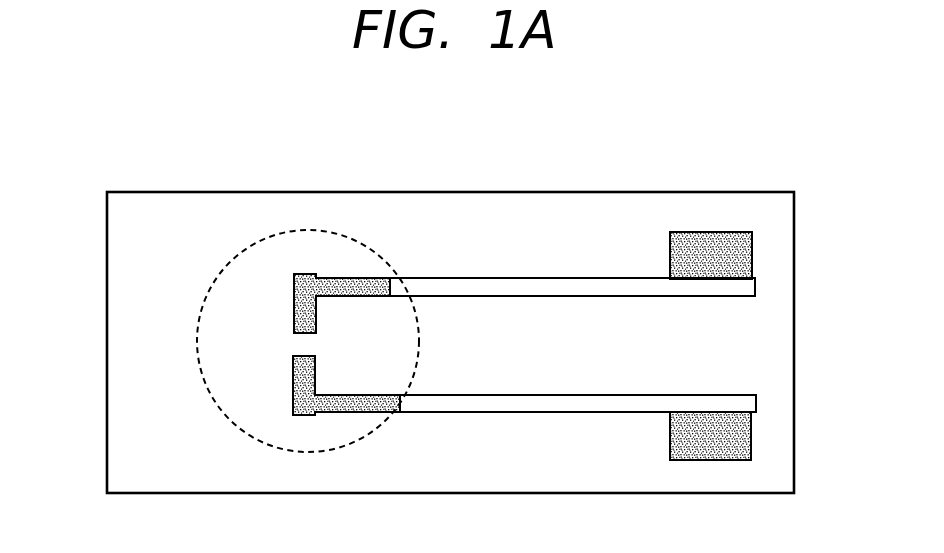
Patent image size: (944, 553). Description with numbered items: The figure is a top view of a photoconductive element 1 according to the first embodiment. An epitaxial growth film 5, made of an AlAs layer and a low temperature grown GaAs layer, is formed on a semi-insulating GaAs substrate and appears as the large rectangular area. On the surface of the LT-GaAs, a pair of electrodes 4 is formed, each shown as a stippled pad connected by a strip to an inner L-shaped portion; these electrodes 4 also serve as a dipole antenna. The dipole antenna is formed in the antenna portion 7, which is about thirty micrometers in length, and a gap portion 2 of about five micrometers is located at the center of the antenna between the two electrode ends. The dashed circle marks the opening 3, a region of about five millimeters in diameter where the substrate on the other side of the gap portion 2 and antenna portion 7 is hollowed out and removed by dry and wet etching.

The photoconductive element 1 is at (542, 171).
The gap portion 2 is at (292, 345).
The opening 3 is at (356, 239).
The electrode 4 is at (741, 270).
The epitaxial growth film 5 is at (154, 240).
The antenna portion 7 is at (294, 287).